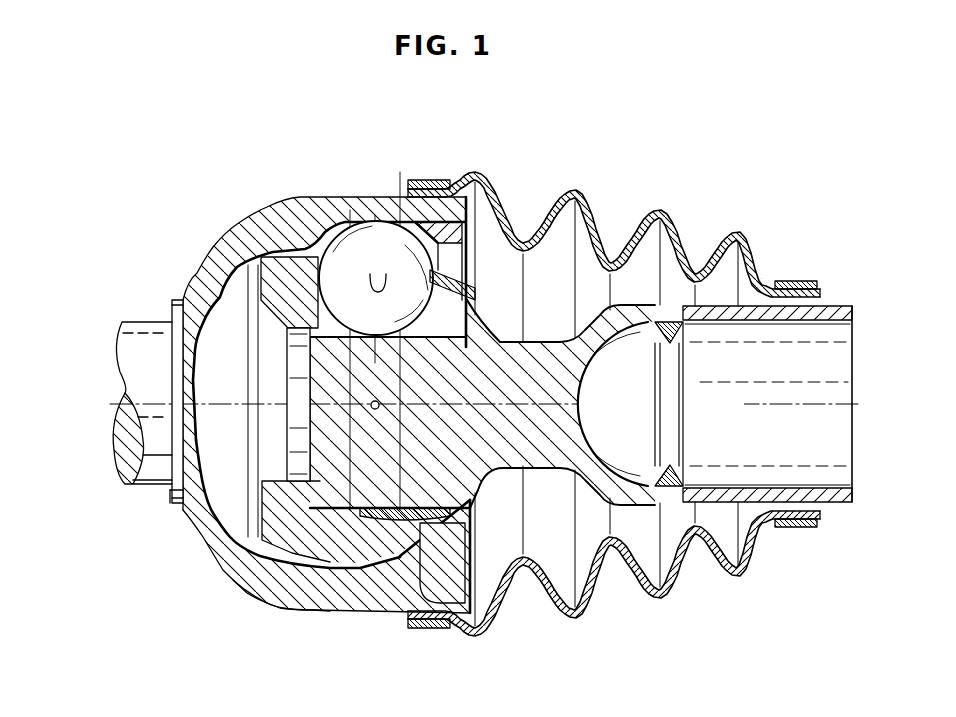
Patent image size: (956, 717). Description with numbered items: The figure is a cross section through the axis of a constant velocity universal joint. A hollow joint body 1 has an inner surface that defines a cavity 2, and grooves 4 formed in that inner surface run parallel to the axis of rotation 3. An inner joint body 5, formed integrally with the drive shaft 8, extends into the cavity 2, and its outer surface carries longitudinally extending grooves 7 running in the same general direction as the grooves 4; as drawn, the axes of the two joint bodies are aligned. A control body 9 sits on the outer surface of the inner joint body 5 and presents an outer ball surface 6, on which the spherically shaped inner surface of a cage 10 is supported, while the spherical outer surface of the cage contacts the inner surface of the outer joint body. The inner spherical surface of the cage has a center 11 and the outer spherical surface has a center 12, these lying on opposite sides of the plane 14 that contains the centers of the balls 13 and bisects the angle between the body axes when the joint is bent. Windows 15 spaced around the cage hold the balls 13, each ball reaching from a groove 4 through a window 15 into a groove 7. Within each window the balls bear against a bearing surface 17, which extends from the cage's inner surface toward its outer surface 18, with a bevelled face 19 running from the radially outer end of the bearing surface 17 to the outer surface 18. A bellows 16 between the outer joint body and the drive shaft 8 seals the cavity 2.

The hollow joint body 1 is at (232, 547).
The cavity 2 is at (205, 500).
The axis of rotation 3 is at (213, 403).
The grooves 4 is at (287, 242).
The inner joint body 5 is at (497, 470).
The ball surface 6 is at (407, 560).
The grooves 7 is at (474, 323).
The drive shaft 8 is at (840, 497).
The control body 9 is at (436, 628).
The cage 10 is at (296, 603).
The center 11 is at (371, 407).
The center 12 is at (350, 407).
The balls 13 is at (363, 235).
The plane 14 is at (370, 570).
The windows 15 is at (325, 252).
The bellows 16 is at (675, 592).
The bearing surface 17 is at (400, 230).
The outer surface 18 is at (270, 603).
The bevelled face 19 is at (433, 180).